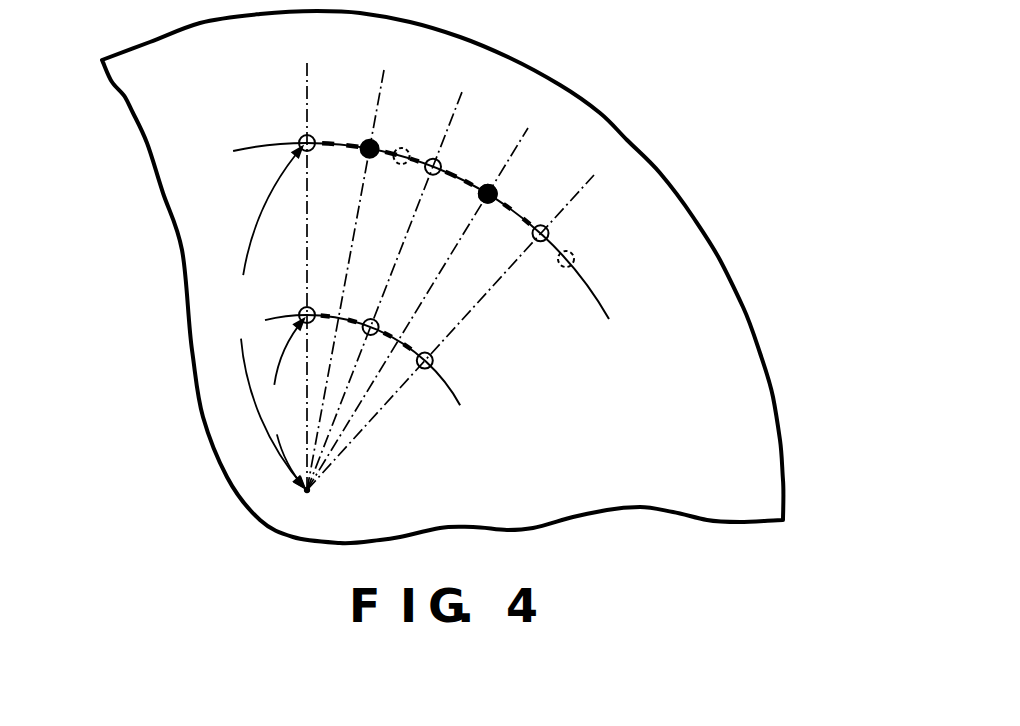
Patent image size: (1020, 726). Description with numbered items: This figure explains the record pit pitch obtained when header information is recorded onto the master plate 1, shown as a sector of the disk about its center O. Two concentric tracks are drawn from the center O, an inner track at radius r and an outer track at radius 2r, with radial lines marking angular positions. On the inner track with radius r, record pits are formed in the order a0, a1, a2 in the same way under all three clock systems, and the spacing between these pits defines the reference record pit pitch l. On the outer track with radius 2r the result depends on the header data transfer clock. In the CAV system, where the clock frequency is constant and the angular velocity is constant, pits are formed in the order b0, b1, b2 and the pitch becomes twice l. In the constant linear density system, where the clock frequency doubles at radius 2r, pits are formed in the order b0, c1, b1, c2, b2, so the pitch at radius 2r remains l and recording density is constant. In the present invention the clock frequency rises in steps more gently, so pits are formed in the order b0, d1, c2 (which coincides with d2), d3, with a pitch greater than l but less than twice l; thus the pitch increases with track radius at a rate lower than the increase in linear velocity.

The master plate 1 is at (742, 290).
The record pit b0 is at (298, 137).
The record pit c1 is at (367, 140).
The record pit d1 is at (403, 147).
The record pit b1 is at (433, 158).
The record pit c2 is at (487, 185).
The record pit d2 is at (502, 147).
The record pit b2 is at (549, 235).
The record pit d3 is at (575, 258).
The record pit a0 is at (302, 310).
The record pit a1 is at (369, 318).
The record pit a2 is at (433, 362).
The radius r is at (285, 403).
The radius 2r is at (261, 317).
The center of rotation O is at (306, 506).
The record pit pitch l is at (340, 150).